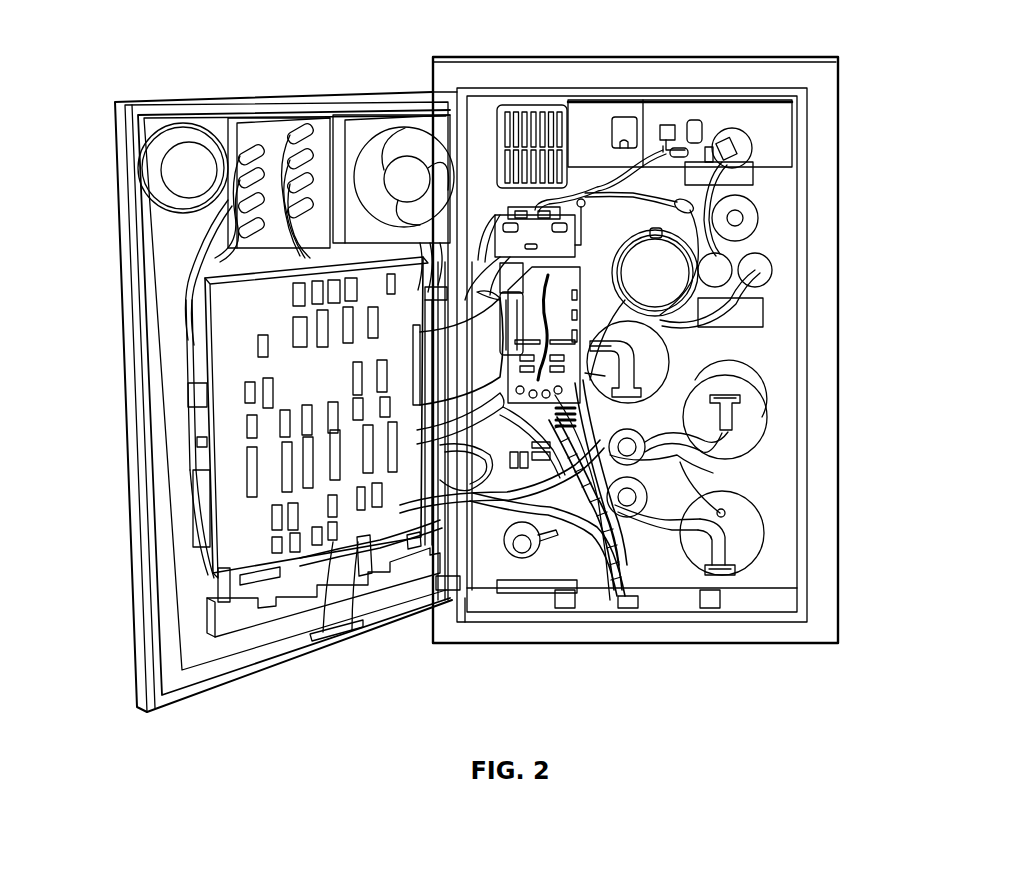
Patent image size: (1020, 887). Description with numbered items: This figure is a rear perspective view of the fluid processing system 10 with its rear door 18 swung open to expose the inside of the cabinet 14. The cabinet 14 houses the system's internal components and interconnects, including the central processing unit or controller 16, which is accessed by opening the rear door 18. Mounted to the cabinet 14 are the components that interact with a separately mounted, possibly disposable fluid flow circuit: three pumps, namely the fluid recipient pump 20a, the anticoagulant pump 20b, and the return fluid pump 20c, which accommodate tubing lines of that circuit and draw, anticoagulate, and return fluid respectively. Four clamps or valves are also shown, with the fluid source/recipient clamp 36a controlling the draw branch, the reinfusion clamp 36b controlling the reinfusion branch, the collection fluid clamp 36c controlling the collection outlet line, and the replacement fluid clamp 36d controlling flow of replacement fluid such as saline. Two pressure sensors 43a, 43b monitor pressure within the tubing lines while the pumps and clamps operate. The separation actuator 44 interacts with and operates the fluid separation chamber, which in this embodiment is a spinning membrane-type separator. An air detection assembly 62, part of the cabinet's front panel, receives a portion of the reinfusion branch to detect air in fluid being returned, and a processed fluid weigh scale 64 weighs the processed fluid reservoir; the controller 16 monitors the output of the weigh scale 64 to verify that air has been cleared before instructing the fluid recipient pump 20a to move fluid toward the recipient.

The fluid processing system 10 is at (96, 621).
The cabinet 14 is at (815, 638).
The controller 16 is at (230, 403).
The rear door 18 is at (209, 689).
The fluid recipient pump 20a is at (747, 543).
The anticoagulant pump 20b is at (752, 430).
The return fluid pump 20c is at (639, 383).
The fluid source/recipient clamp 36a is at (637, 452).
The reinfusion clamp 36b is at (638, 500).
The collection fluid clamp 36c is at (523, 556).
The replacement fluid clamp 36d is at (742, 207).
The pressure sensor 43a is at (763, 262).
The pressure sensor 43b is at (718, 263).
The separation actuator 44 is at (532, 108).
The air detection assembly 62 is at (632, 609).
The processed fluid weigh scale 64 is at (573, 397).